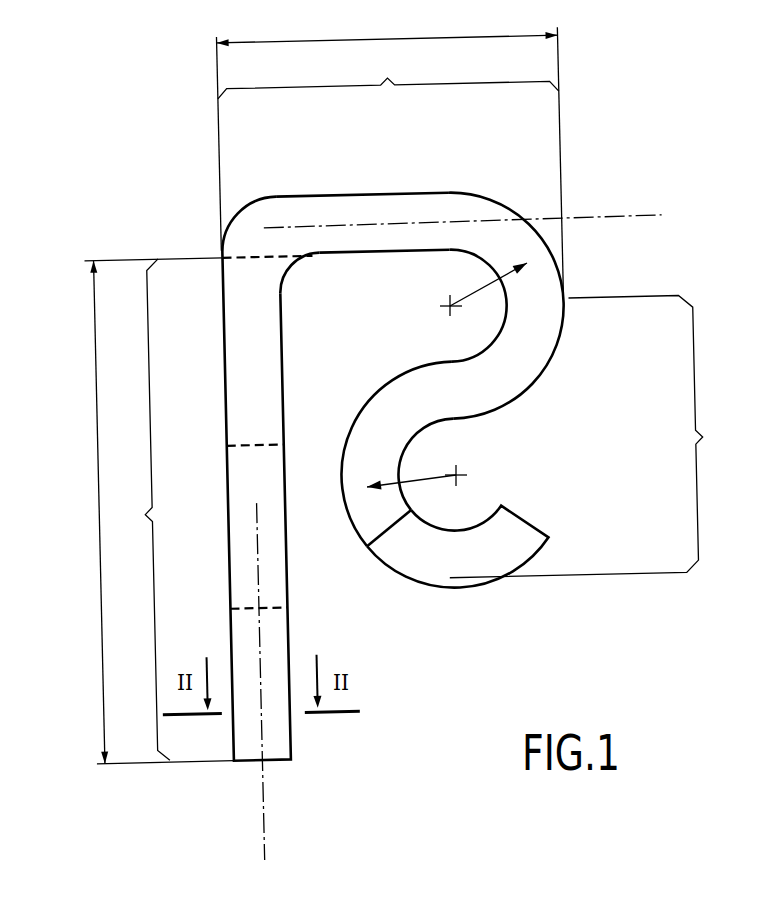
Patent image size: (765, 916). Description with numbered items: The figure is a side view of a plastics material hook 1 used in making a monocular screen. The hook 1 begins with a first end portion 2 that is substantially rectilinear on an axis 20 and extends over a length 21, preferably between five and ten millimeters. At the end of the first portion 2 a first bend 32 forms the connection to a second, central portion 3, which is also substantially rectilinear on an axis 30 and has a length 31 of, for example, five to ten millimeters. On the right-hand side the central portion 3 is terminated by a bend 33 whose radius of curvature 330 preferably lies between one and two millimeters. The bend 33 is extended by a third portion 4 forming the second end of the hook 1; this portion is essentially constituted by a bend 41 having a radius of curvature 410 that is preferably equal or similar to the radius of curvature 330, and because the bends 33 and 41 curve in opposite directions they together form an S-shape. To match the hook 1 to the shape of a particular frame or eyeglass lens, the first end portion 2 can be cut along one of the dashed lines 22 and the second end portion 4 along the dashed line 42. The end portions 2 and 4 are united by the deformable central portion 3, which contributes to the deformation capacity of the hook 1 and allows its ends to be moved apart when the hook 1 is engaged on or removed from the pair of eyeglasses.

The hook 1 is at (92, 157).
The first end portion 2 is at (217, 558).
The second portion 3 is at (426, 215).
The third portion 4 is at (517, 442).
The axis 20 is at (262, 790).
The length 21 is at (151, 511).
The dashed lines 22 is at (250, 257).
The axis 30 is at (612, 213).
The length 31 is at (389, 156).
The first bend 32 is at (252, 231).
The bend 33 is at (540, 282).
The bend 41 is at (377, 430).
The dashed line 42 is at (395, 526).
The radius of curvature 330 is at (478, 292).
The radius of curvature 410 is at (423, 473).